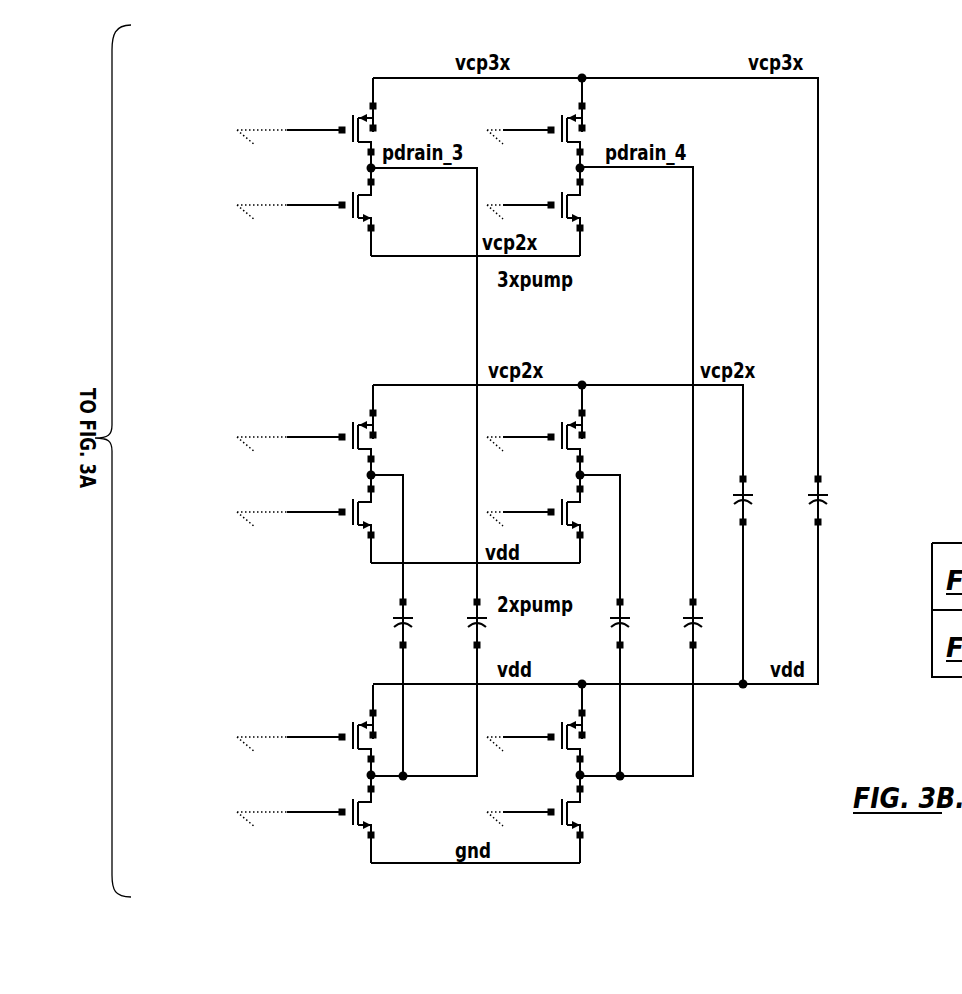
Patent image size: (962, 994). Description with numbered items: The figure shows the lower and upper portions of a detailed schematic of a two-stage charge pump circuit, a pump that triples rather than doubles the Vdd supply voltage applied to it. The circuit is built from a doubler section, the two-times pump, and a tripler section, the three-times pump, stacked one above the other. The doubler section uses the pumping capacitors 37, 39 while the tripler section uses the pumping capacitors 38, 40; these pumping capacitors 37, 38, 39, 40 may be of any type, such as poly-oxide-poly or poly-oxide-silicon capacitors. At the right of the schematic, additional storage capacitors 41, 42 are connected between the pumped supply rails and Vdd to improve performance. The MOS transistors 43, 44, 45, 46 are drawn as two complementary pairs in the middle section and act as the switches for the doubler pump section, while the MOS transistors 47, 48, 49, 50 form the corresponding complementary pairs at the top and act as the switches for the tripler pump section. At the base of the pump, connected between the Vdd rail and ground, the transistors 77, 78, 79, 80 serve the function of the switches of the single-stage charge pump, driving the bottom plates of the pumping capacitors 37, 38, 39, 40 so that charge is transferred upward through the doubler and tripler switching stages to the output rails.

The pumping capacitor 37 is at (397, 608).
The pumping capacitor 38 is at (477, 616).
The pumping capacitor 39 is at (618, 616).
The pumping capacitor 40 is at (684, 607).
The storage capacitor 41 is at (752, 495).
The storage capacitor 42 is at (828, 495).
The MOS transistor 43 is at (354, 430).
The MOS transistor 44 is at (566, 430).
The MOS transistor 45 is at (355, 527).
The MOS transistor 46 is at (557, 523).
The MOS transistor 47 is at (356, 122).
The MOS transistor 48 is at (566, 122).
The MOS transistor 49 is at (347, 217).
The MOS transistor 50 is at (570, 218).
The transistor 77 is at (360, 750).
The transistor 78 is at (360, 825).
The transistor 79 is at (572, 750).
The transistor 80 is at (573, 827).